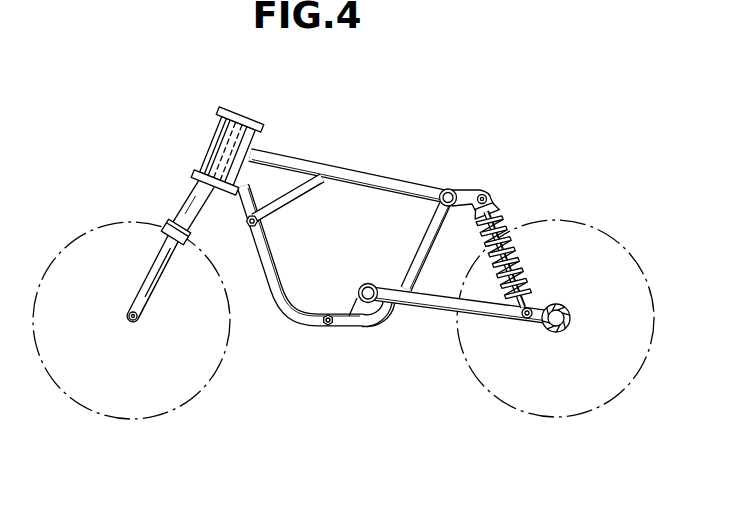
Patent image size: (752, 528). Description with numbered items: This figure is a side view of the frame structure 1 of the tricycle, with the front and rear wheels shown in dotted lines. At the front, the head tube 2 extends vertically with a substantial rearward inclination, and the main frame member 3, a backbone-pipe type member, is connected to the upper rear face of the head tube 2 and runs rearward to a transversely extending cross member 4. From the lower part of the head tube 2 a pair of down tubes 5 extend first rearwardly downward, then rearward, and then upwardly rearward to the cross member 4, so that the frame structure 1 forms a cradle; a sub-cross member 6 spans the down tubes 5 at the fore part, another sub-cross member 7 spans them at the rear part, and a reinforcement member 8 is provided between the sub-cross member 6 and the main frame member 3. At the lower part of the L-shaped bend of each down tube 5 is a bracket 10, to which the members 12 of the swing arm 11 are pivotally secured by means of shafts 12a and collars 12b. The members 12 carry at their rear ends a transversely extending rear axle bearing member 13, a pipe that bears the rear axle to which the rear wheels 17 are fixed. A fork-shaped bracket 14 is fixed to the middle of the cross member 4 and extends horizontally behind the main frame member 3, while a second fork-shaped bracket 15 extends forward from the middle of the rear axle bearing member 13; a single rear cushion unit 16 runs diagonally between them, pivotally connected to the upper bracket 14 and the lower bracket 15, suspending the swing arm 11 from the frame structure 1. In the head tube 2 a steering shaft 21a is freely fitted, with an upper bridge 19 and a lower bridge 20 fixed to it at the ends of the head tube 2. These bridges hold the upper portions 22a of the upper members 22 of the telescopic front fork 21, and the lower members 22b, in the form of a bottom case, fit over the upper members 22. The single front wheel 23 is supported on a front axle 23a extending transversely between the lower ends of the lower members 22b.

The frame structure 1 is at (345, 211).
The head tube 2 is at (212, 124).
The main frame member 3 is at (325, 155).
The cross member 4 is at (445, 190).
The down tube 5 is at (272, 260).
The sub-cross member 6 is at (248, 238).
The sub-cross member 7 is at (320, 325).
The reinforcement member 8 is at (290, 196).
The bracket 10 is at (374, 284).
The swing arm 11 is at (446, 319).
The swing arm member 12 is at (410, 312).
The shaft 12a is at (362, 284).
The collar 12b is at (367, 322).
The rear axle bearing member 13 is at (553, 331).
The bracket 14 is at (467, 192).
The bracket 15 is at (533, 309).
The rear cushion unit 16 is at (495, 212).
The rear wheel 17 is at (592, 226).
The upper bridge 19 is at (232, 113).
The lower bridge 20 is at (196, 172).
The telescopic front fork 21 is at (150, 258).
The steering shaft 21a is at (262, 137).
The upper member 22 is at (187, 219).
The upper portion 22a is at (212, 157).
The lower member 22b is at (153, 298).
The front wheel 23 is at (207, 390).
The front axle 23a is at (128, 316).